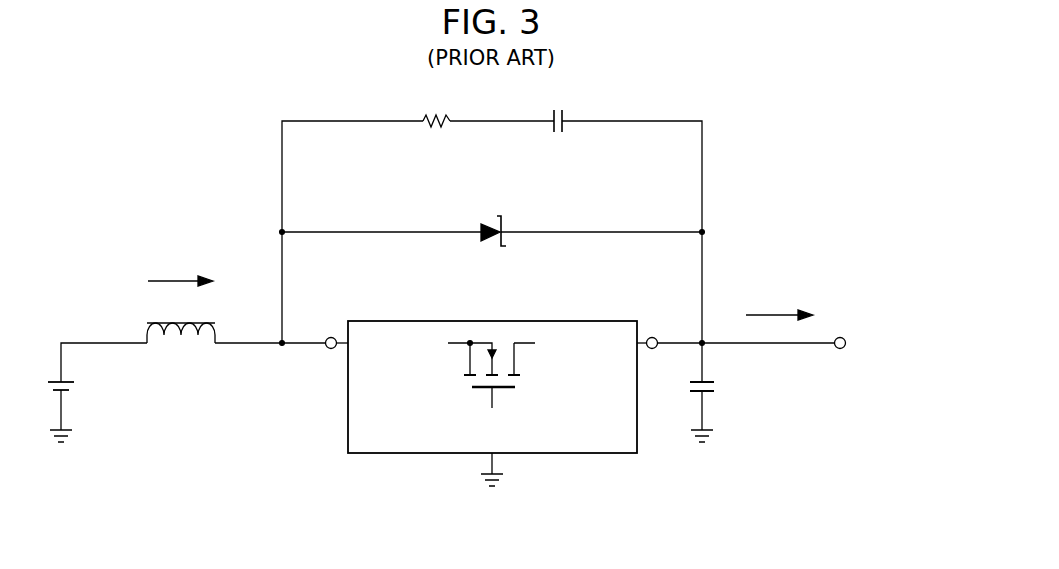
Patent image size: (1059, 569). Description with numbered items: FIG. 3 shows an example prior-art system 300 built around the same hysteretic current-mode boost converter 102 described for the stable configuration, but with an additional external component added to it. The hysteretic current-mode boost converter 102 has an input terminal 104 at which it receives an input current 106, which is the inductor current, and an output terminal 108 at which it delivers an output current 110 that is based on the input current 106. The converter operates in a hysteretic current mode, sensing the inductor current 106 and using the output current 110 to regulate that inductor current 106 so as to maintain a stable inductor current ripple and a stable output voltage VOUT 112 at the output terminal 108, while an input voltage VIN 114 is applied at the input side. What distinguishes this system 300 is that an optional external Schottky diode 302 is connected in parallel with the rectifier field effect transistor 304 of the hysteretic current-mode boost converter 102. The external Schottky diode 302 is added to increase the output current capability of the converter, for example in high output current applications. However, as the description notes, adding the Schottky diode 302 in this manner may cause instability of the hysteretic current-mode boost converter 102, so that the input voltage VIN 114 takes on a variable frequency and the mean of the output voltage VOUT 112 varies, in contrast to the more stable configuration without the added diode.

The system 300 is at (137, 142).
The hysteretic current-mode boost converter 102 is at (568, 320).
The input terminal 104 is at (329, 349).
The input current 106 is at (175, 280).
The output terminal 108 is at (656, 337).
The output current 110 is at (777, 313).
The output voltage VOUT 112 is at (801, 346).
The input voltage VIN 114 is at (105, 341).
The external Schottky diode D1 302 is at (497, 226).
The rectifier field effect transistor 304 is at (472, 388).